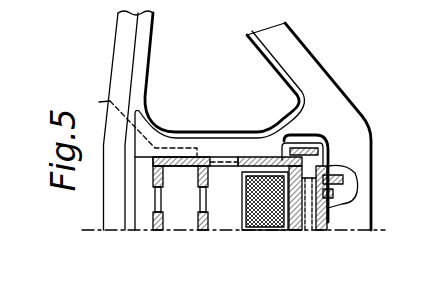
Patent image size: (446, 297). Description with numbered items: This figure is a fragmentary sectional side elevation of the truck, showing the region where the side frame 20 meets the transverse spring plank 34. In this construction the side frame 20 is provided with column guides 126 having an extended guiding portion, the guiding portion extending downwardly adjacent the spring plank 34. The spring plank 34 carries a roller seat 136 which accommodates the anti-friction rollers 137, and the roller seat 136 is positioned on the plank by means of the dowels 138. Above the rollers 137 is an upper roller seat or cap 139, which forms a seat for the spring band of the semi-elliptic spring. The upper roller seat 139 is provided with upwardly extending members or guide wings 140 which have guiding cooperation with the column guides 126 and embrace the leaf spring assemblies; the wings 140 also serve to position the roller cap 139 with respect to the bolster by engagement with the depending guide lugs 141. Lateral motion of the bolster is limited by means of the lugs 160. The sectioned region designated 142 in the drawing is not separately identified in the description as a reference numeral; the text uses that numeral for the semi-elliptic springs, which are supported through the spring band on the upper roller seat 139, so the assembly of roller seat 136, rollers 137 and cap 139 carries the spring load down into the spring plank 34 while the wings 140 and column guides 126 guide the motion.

The side frame 20 is at (104, 202).
The spring plank 34 is at (319, 143).
The column guides 126 is at (223, 143).
The roller seat 136 is at (323, 232).
The anti-friction rollers 137 is at (306, 232).
The dowels 138 is at (345, 166).
The upper roller seat or cap 139 is at (289, 231).
The guide wings 140 is at (275, 157).
The depending guide lugs 141 is at (212, 157).
The coil winding 142 is at (263, 229).
The lugs 160 is at (157, 114).